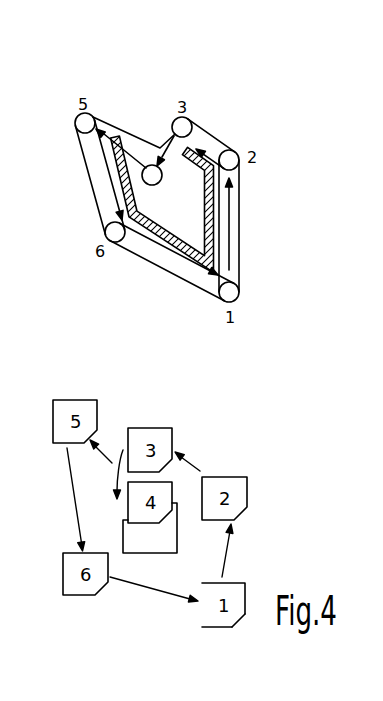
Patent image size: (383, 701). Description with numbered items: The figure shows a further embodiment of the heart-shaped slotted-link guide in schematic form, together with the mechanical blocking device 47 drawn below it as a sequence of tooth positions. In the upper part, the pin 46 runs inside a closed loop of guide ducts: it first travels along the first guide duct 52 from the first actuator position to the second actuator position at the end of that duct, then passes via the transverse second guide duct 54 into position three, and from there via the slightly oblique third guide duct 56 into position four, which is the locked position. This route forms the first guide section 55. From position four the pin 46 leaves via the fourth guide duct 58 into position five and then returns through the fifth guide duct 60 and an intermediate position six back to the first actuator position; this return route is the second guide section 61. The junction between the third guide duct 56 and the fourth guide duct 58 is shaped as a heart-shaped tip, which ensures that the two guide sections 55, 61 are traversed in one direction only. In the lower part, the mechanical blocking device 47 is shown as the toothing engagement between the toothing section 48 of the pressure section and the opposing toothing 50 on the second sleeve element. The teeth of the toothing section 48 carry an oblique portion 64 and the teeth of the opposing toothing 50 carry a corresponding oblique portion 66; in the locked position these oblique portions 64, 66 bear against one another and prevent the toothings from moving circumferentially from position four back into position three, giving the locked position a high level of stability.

The fourth guide duct 58 is at (113, 132).
The third guide duct 56 is at (157, 137).
The second guide duct 54 is at (220, 142).
The first guide section 55 is at (233, 200).
The first guide duct 52 is at (232, 228).
The pin 46 is at (230, 290).
The fifth guide duct 60 is at (92, 192).
The second guide section 61 is at (176, 272).
The mechanical blocking device 47 is at (214, 409).
The oblique portion 66 is at (161, 513).
The opposing toothing 50 is at (167, 543).
The toothing section 48 is at (235, 598).
The oblique portion 64 is at (232, 623).